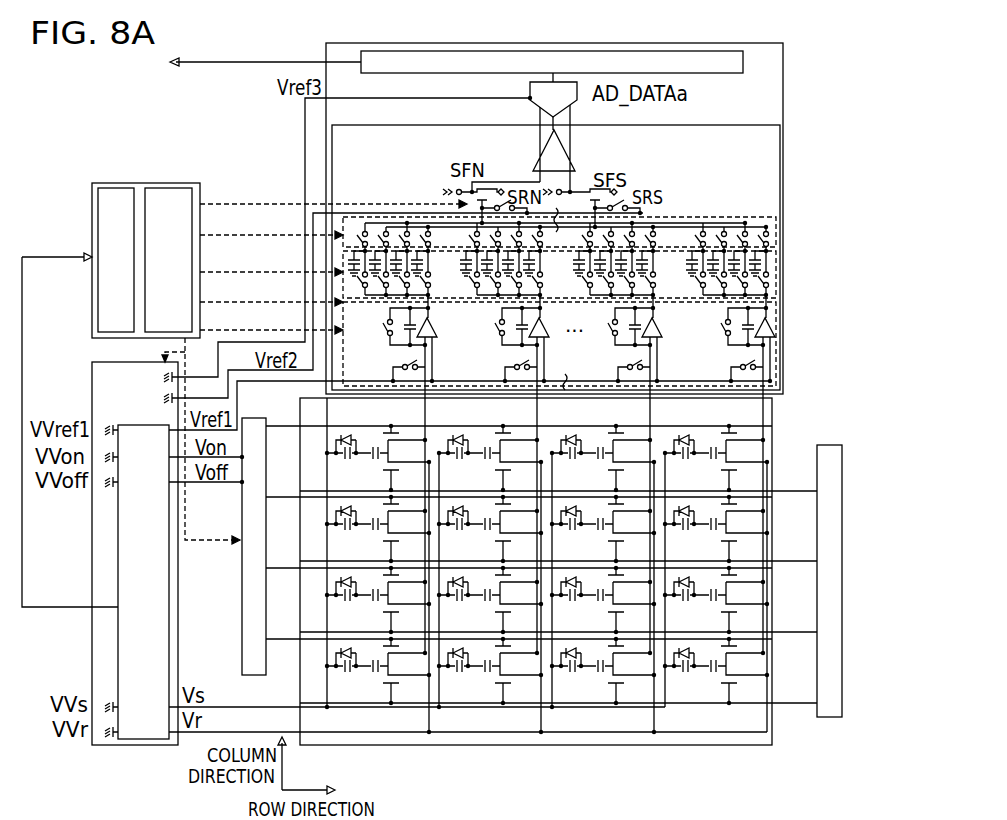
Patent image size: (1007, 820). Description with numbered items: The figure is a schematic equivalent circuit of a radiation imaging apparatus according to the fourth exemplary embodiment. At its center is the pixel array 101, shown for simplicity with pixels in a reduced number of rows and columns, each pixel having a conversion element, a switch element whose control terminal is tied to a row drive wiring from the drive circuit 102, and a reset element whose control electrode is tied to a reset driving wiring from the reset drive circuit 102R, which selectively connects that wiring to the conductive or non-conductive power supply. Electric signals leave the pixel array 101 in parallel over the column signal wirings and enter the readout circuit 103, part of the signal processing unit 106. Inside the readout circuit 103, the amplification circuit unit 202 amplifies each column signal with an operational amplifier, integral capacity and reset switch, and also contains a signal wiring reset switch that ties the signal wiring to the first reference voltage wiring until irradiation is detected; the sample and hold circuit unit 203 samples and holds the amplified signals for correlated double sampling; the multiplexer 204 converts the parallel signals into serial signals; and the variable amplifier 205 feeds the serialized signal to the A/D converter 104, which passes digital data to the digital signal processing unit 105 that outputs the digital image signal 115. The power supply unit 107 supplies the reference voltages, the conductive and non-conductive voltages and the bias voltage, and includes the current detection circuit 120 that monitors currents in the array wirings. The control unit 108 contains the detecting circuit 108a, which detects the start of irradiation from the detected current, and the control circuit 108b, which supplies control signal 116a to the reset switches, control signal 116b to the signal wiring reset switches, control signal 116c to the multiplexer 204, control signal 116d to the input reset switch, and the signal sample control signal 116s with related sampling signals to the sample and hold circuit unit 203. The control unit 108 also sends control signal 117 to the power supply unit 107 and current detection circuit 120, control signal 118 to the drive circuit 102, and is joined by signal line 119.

The pixel array 101 is at (779, 736).
The drive circuit 102 is at (242, 595).
The reset drive circuit 102R is at (826, 445).
The readout circuit 103 is at (397, 125).
The A/D converter 104 is at (530, 88).
The digital signal processing unit 105 is at (744, 62).
The signal processing unit 106 is at (784, 59).
The power supply unit 107 is at (92, 547).
The control unit 108 is at (112, 183).
The detecting circuit 108a is at (117, 188).
The control circuit 108b is at (168, 188).
The digital image signal 115 is at (248, 60).
The control signal 116a is at (236, 326).
The control signal 116b is at (236, 298).
The control signal 116c is at (236, 231).
The control signal 116d is at (236, 200).
The signal sample control signal 116s is at (248, 268).
The control signal 117 is at (150, 346).
The control signal 118 is at (218, 529).
The signal line 119 is at (42, 257).
The current detection circuit 120 is at (120, 587).
The amplification circuit unit 202 is at (781, 328).
The sample and hold circuit unit 203 is at (781, 272).
The multiplexer 204 is at (781, 232).
The variable amplifier 205 is at (561, 136).